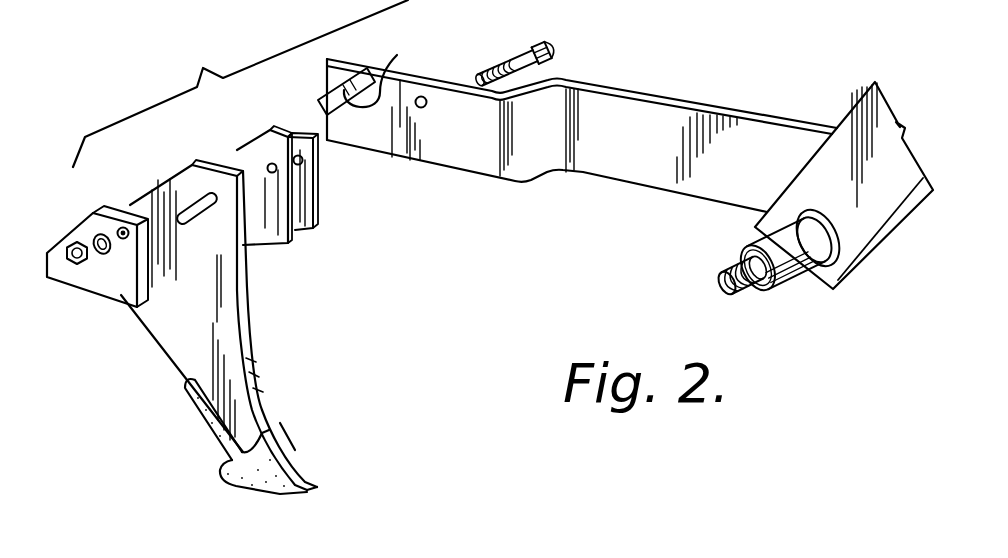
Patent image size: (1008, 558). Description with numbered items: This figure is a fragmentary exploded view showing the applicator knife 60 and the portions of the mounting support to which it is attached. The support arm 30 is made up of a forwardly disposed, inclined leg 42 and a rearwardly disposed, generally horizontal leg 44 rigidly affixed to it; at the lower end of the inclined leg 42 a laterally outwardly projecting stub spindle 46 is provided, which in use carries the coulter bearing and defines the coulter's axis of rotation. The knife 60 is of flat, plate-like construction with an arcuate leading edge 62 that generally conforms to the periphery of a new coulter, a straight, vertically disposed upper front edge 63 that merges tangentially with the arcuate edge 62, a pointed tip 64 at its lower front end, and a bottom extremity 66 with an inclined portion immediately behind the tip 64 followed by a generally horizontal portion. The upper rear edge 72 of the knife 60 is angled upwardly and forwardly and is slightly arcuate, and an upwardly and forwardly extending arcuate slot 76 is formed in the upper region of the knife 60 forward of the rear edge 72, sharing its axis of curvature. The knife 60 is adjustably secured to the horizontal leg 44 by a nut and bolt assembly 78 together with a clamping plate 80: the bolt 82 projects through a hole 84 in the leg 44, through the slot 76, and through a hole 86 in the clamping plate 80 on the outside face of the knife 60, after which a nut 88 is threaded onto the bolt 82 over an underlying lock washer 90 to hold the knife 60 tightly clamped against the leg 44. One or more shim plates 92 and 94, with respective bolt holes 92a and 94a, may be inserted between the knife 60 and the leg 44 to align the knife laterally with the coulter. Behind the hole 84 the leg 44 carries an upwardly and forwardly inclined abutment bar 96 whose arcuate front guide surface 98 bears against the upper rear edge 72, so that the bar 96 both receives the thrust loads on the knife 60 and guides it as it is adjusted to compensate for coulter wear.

The support arm 30 is at (802, 121).
The inclined leg 42 is at (882, 87).
The horizontal leg 44 is at (645, 112).
The stub spindle 46 is at (785, 279).
The applicator knife 60 is at (221, 321).
The arcuate leading edge 62 is at (250, 342).
The upper front edge 63 is at (240, 210).
The pointed tip 64 is at (320, 486).
The bottom extremity 66 is at (265, 493).
The upper rear edge 72 is at (170, 182).
The slot 76 is at (199, 197).
The nut and bolt assembly 78 is at (515, 56).
The clamping plate 80 is at (97, 255).
The bolt 82 is at (550, 50).
The hole 84 is at (422, 108).
The hole 86 is at (124, 227).
The nut 88 is at (77, 241).
The lock washer 90 is at (110, 251).
The shim plate 92 is at (261, 187).
The bolt hole 92a is at (268, 164).
The shim plate 94 is at (322, 160).
The bolt hole 94a is at (298, 156).
The abutment bar 96 is at (338, 79).
The arcuate front guide surface 98 is at (386, 74).